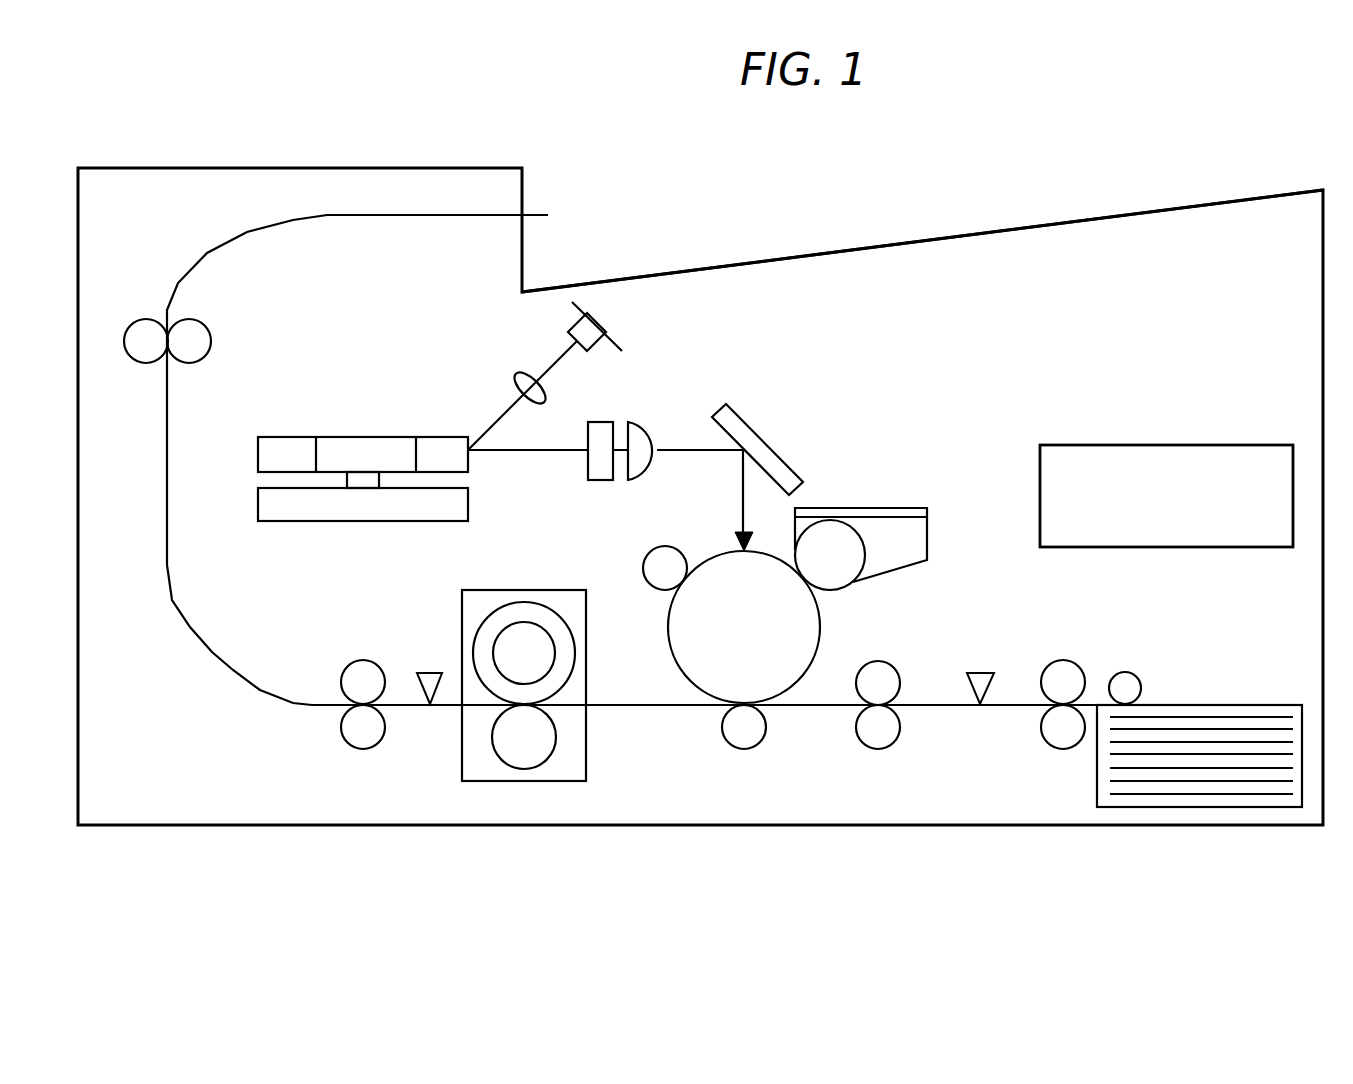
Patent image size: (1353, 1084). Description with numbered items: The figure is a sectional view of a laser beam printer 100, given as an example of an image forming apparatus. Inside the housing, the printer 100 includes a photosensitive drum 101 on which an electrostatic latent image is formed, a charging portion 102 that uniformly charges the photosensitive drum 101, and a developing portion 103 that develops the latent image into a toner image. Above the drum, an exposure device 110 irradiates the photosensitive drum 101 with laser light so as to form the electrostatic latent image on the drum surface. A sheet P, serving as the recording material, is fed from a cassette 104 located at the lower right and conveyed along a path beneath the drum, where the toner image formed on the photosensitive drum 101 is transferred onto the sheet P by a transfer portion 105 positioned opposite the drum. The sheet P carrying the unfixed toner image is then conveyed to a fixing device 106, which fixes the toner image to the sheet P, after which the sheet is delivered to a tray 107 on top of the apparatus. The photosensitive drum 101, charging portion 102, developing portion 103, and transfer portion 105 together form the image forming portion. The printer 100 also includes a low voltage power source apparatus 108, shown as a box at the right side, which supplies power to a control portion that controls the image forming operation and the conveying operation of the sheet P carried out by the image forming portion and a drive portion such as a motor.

The laser beam printer 100 is at (702, 838).
The photosensitive drum 101 is at (667, 633).
The charging portion 102 is at (648, 552).
The developing portion 103 is at (920, 508).
The cassette 104 is at (1243, 704).
The transfer portion 105 is at (730, 748).
The fixing device 106 is at (461, 752).
The tray 107 is at (746, 262).
The low voltage power source apparatus 108 is at (1168, 445).
The exposure device 110 is at (363, 432).
The sheet P is at (1140, 793).